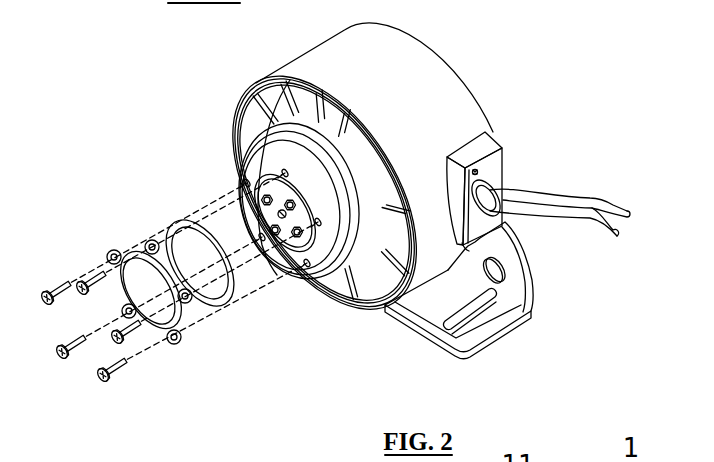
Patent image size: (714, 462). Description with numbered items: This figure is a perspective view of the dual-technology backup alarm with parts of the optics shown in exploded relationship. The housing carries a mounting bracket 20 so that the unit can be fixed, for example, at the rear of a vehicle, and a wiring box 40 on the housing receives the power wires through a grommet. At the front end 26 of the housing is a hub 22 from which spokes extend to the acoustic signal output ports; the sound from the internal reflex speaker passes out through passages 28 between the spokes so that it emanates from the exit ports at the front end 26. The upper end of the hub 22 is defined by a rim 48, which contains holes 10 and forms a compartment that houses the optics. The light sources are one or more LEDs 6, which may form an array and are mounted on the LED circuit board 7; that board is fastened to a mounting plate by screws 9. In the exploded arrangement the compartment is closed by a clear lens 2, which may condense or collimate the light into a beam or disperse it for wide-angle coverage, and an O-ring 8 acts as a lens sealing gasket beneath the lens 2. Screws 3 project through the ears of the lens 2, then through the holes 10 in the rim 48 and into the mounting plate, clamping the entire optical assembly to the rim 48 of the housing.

The lens 2 is at (148, 287).
The screws 3 is at (127, 370).
The LEDs 6 is at (265, 154).
The LED circuit board 7 is at (252, 208).
The O-ring 8 is at (283, 216).
The screws 9 is at (297, 228).
The holes 10 is at (318, 226).
The mounting bracket 20 is at (528, 283).
The hub 22 is at (363, 163).
The front end 26 is at (247, 110).
The passages 28 is at (255, 95).
The wiring box 40 is at (493, 170).
The rim 48 is at (310, 90).